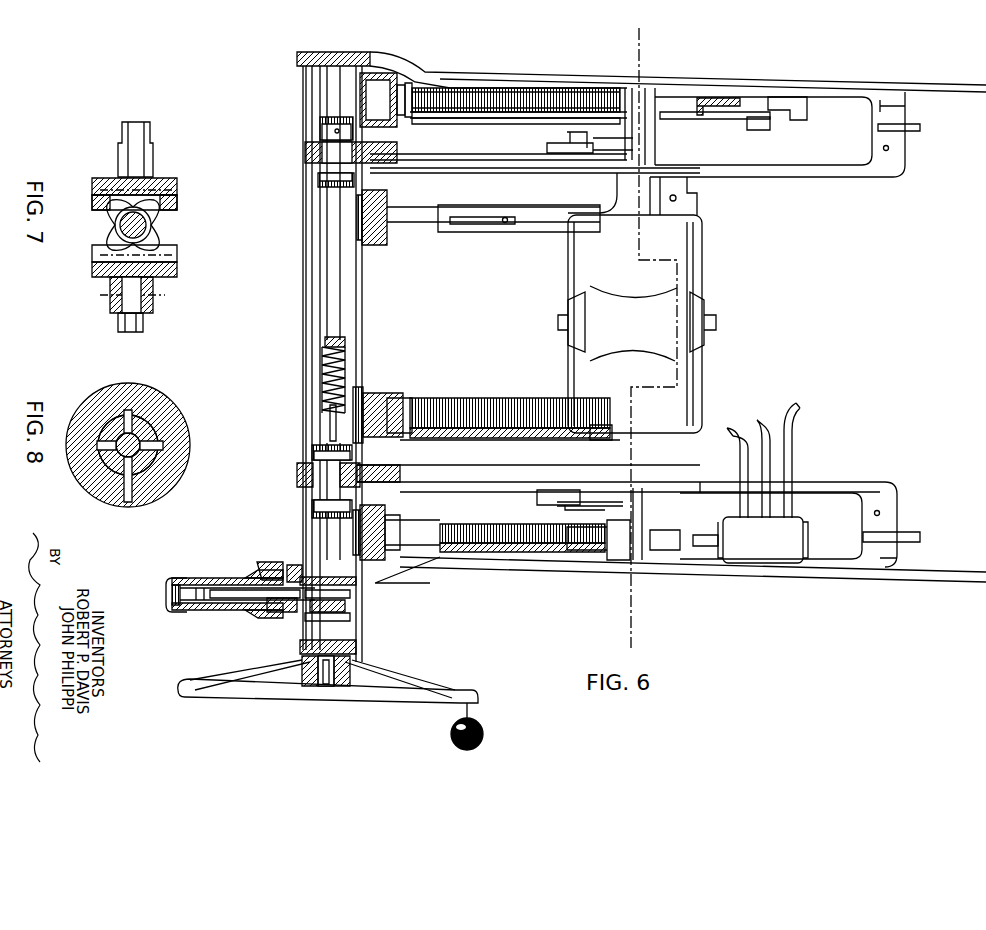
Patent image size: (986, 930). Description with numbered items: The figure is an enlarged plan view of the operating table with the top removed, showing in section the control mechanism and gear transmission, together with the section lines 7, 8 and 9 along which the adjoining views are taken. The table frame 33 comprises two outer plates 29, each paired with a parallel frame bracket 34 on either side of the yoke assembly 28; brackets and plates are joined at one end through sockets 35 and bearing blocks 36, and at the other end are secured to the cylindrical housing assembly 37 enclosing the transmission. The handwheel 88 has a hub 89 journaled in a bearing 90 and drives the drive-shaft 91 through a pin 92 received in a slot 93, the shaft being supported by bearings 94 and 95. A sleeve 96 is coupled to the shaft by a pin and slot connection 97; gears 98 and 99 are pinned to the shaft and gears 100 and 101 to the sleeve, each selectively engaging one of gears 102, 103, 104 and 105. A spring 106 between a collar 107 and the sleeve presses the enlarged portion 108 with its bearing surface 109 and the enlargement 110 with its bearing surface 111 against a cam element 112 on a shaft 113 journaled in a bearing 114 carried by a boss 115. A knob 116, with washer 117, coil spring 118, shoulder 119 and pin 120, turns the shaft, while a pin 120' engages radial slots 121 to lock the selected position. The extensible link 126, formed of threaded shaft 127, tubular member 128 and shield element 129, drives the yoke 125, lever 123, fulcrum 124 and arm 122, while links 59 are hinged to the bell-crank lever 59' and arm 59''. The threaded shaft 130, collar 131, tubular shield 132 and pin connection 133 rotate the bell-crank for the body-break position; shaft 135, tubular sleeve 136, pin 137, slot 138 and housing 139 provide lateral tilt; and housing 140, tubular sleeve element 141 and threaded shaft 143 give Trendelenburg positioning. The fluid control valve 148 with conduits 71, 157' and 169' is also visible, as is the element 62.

In FIG. 6, the section line 7- 7 is at (333, 550).
In FIG. 6, the section line 8- 8 is at (270, 523).
In FIG. 6, the section line 9- 9 is at (622, 633).
In FIG. 6, the yoke assembly 28 is at (711, 288).
In FIG. 6, the outer plates 29 is at (838, 85).
In FIG. 6, the table frame 33 is at (940, 592).
In FIG. 6, the frame brackets 34 is at (832, 487).
In FIG. 6, the sockets 35 is at (900, 157).
In FIG. 6, the bearing blocks 36 is at (903, 108).
In FIG. 6, the cylindrical housing assembly 37 is at (295, 381).
In FIG. 6, the links 59 is at (566, 323).
In FIG. 6, the bell-crank lever 59' is at (622, 524).
In FIG. 6, the arm 59'' is at (563, 134).
In FIG. 6, the rod 62 is at (920, 127).
In FIG. 6, the conduit 71 is at (790, 452).
In FIG. 6, the handwheel 88 is at (215, 690).
In FIG. 6, the hub 89 is at (305, 688).
In FIG. 6, the bearing 90 is at (356, 664).
In FIG. 6, the drive-shaft 91 is at (330, 288).
In FIG. 7, the drive-shaft 91 is at (120, 320).
In FIG. 6, the pin 92 is at (326, 688).
In FIG. 6, the slot 93 is at (336, 682).
In FIG. 6, the bearing 94 is at (306, 152).
In FIG. 6, the bearing 95 is at (358, 467).
In FIG. 6, the sleeve 96 is at (327, 477).
In FIG. 7, the sleeve 96 is at (121, 163).
In FIG. 6, the pin and slot connection 97 is at (328, 422).
In FIG. 6, the gear 98 is at (312, 116).
In FIG. 6, the gear 99 is at (313, 193).
In FIG. 6, the gear 100 is at (318, 443).
In FIG. 6, the gear 101 is at (315, 513).
In FIG. 6, the gear 102 is at (362, 80).
In FIG. 6, the gear 103 is at (360, 250).
In FIG. 6, the gear 104 is at (360, 392).
In FIG. 6, the gear 105 is at (380, 517).
In FIG. 6, the spring 106 is at (327, 350).
In FIG. 6, the collar 107 is at (340, 342).
In FIG. 6, the enlarged portion 108 is at (352, 592).
In FIG. 7, the enlarged portion 108 is at (167, 195).
In FIG. 6, the bearing surface 109 is at (362, 583).
In FIG. 7, the bearing surface 109 is at (182, 210).
In FIG. 6, the enlargement 110 is at (345, 642).
In FIG. 7, the enlargement 110 is at (165, 268).
In FIG. 6, the bearing surface 111 is at (350, 617).
In FIG. 7, the bearing surface 111 is at (168, 242).
In FIG. 6, the cam element 112 is at (348, 604).
In FIG. 7, the cam element 112 is at (107, 233).
In FIG. 6, the shaft 113 is at (205, 602).
In FIG. 7, the shaft 113 is at (123, 222).
In FIG. 8, the shaft 113 is at (133, 457).
In FIG. 6, the bearing 114 is at (290, 575).
In FIG. 8, the bearing 114 is at (103, 425).
In FIG. 6, the boss 115 is at (290, 610).
In FIG. 6, the knob 116 is at (192, 578).
In FIG. 8, the knob 116 is at (82, 473).
In FIG. 6, the washer 117 is at (186, 578).
In FIG. 6, the coil spring 118 is at (202, 596).
In FIG. 6, the shoulder 119 is at (210, 613).
In FIG. 6, the pin 120 is at (241, 565).
In FIG. 6, the pin 120' is at (252, 638).
In FIG. 8, the pin 120' is at (120, 506).
In FIG. 6, the radial slots 121 is at (262, 570).
In FIG. 8, the radial slots 121 is at (157, 440).
In FIG. 6, the arm 122 is at (700, 120).
In FIG. 6, the lever 123 is at (770, 115).
In FIG. 6, the fulcrum 124 is at (793, 120).
In FIG. 6, the yoke 125 is at (715, 100).
In FIG. 6, the extensible link 126 is at (506, 130).
In FIG. 6, the threaded shaft 127 is at (428, 116).
In FIG. 6, the tubular member 128 is at (446, 114).
In FIG. 6, the shield element 129 is at (428, 88).
In FIG. 6, the threaded shaft 130 is at (462, 553).
In FIG. 6, the collar 131 is at (520, 553).
In FIG. 6, the tubular shield 132 is at (567, 550).
In FIG. 6, the pin connection 133 is at (660, 550).
In FIG. 6, the shaft 135 is at (393, 223).
In FIG. 6, the tubular sleeve 136 is at (530, 228).
In FIG. 6, the pin 137 is at (503, 223).
In FIG. 6, the slot 138 is at (457, 222).
In FIG. 6, the housing 139 is at (606, 202).
In FIG. 6, the housing 140 is at (453, 438).
In FIG. 6, the tubular sleeve element 141 is at (570, 438).
In FIG. 6, the threaded shaft 143 is at (437, 408).
In FIG. 6, the fluid control valve 148 is at (765, 557).
In FIG. 6, the conduit 157' is at (743, 462).
In FIG. 6, the conduit 169' is at (720, 473).